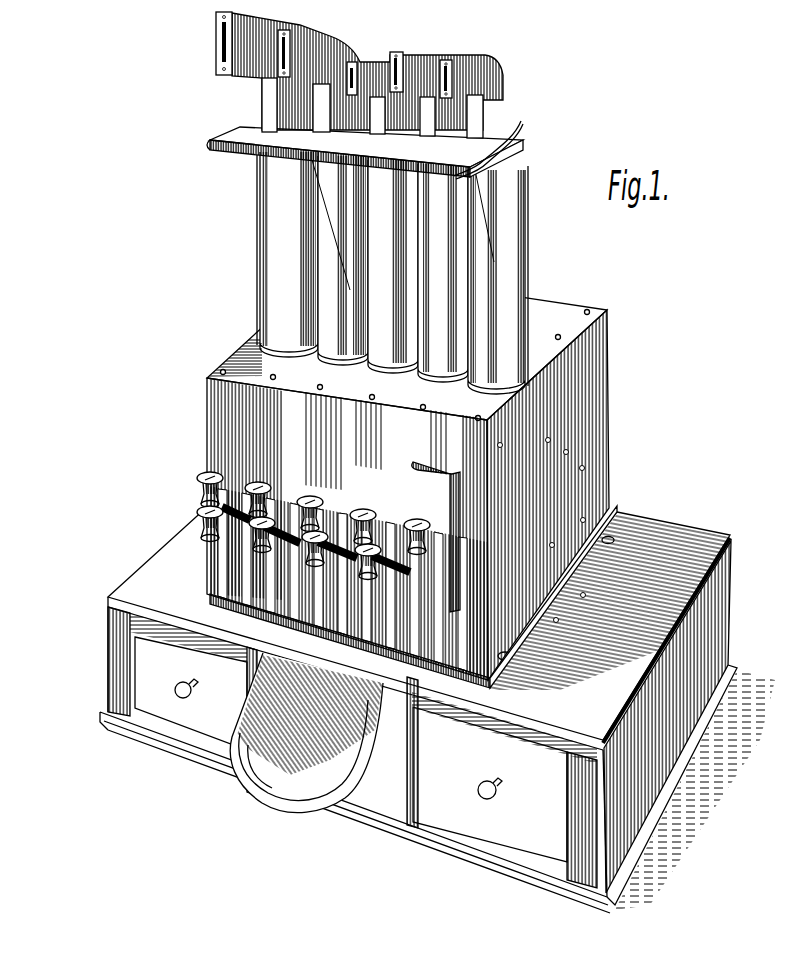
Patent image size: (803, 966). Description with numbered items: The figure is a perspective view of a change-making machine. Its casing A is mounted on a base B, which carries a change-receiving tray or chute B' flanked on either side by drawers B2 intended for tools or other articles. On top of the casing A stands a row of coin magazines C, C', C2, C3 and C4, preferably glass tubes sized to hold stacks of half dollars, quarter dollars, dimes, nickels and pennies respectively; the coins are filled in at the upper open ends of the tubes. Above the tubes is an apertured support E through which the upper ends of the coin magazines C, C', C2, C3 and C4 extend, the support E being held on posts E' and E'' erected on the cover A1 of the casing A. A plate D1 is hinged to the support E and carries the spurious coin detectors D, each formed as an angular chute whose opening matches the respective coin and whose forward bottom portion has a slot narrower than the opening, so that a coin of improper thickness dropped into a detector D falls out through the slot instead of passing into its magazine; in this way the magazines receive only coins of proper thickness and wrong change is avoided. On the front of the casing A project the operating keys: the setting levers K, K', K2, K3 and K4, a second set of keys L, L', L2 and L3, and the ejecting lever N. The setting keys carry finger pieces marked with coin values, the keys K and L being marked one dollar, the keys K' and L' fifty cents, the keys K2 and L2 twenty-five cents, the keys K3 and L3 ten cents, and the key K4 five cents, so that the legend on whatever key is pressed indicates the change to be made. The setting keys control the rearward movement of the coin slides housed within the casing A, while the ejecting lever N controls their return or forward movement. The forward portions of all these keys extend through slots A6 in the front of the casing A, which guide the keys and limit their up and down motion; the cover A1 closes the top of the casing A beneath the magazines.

The casing A is at (212, 428).
The cover A1 is at (567, 310).
The slots A6 is at (216, 585).
The base B is at (437, 704).
The change-receiving tray or chute B' is at (292, 738).
The drawers B2 is at (182, 720).
The coin magazine C is at (272, 254).
The coin magazine C' is at (341, 270).
The coin magazine C2 is at (393, 338).
The coin magazine C3 is at (443, 352).
The coin magazine C4 is at (492, 247).
The spurious coin detector D is at (222, 74).
The plate D1 is at (512, 124).
The apertured support E is at (380, 204).
The post E' is at (238, 250).
The post E'' is at (542, 276).
The setting lever K is at (192, 479).
The setting lever K' is at (266, 478).
The setting lever K2 is at (317, 498).
The setting lever K3 is at (367, 511).
The setting lever K4 is at (420, 522).
The key L is at (200, 524).
The key L' is at (241, 546).
The key L2 is at (327, 533).
The key L3 is at (372, 549).
The ejecting lever N is at (441, 462).